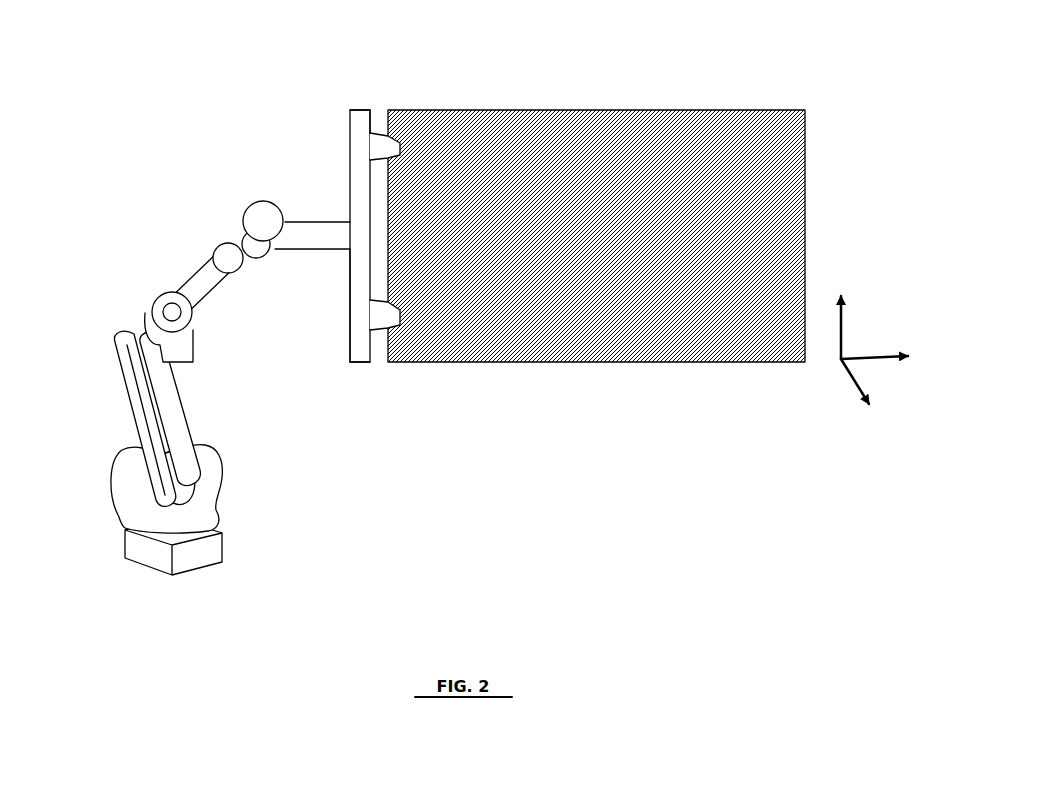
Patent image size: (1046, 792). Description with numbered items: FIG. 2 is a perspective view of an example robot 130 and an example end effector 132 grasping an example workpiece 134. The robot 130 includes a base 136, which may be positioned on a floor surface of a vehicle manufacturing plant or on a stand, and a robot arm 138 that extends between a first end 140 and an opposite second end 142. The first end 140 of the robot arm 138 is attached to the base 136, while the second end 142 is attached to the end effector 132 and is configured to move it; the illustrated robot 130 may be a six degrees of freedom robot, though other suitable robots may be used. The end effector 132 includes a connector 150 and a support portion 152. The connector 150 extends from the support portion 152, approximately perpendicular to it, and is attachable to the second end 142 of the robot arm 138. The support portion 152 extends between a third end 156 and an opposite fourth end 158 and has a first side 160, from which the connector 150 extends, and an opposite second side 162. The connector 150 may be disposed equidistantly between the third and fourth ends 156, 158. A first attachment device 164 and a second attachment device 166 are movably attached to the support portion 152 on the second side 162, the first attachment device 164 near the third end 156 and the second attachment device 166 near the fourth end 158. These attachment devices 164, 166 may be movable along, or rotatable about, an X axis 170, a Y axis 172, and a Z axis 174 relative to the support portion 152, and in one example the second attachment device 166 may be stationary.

The robot 130 is at (181, 364).
The end effector 132 is at (334, 239).
The workpiece 134 is at (788, 107).
The base 136 is at (205, 553).
The robot arm 138 is at (190, 397).
The first end 140 is at (142, 507).
The second end 142 is at (262, 222).
The connector 150 is at (317, 244).
The support portion 152 is at (360, 185).
The third end 156 is at (356, 108).
The fourth end 158 is at (362, 352).
The first side 160 is at (350, 318).
The second side 162 is at (371, 130).
The first attachment device 164 is at (390, 148).
The second attachment device 166 is at (385, 323).
The X axis 170 is at (877, 360).
The Y axis 172 is at (843, 328).
The Z axis 174 is at (850, 378).